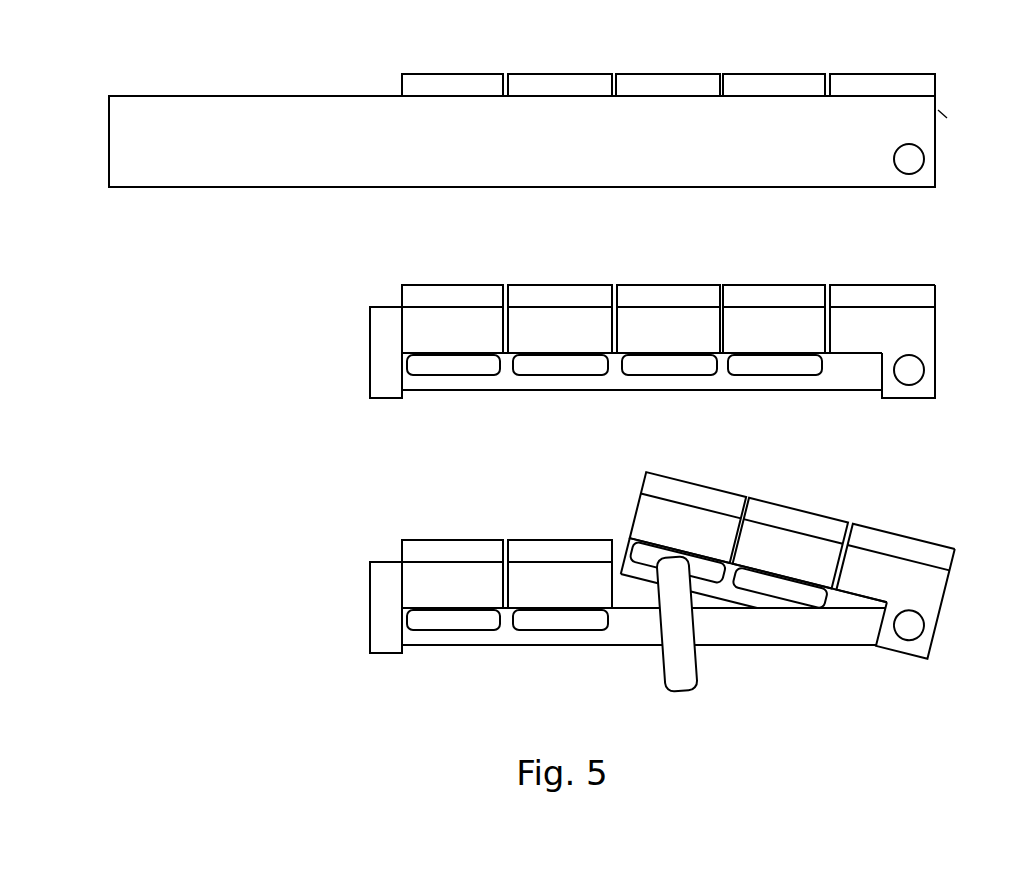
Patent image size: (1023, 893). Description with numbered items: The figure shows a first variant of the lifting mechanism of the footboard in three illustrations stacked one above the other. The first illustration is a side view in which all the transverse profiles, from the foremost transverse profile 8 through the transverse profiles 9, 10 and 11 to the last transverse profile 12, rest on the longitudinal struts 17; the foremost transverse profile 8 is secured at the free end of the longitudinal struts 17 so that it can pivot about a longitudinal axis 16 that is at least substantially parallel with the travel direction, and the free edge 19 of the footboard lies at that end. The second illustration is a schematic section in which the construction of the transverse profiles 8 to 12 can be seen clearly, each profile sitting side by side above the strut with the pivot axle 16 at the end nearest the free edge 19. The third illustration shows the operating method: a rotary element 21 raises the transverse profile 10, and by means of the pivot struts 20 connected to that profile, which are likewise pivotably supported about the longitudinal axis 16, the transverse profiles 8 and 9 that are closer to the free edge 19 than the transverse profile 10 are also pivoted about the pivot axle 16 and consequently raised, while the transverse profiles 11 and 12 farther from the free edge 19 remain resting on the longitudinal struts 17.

The foremost transverse profile 8 is at (867, 85).
The transverse profile 9 is at (760, 85).
The transverse profile 10 is at (658, 85).
The transverse profile 11 is at (557, 85).
The last transverse profile 12 is at (428, 87).
The longitudinal axis 16 is at (912, 157).
The longitudinal struts 17 is at (571, 147).
The free edge 19 is at (938, 108).
The pivot struts 20 is at (757, 585).
The rotary element 21 is at (682, 665).